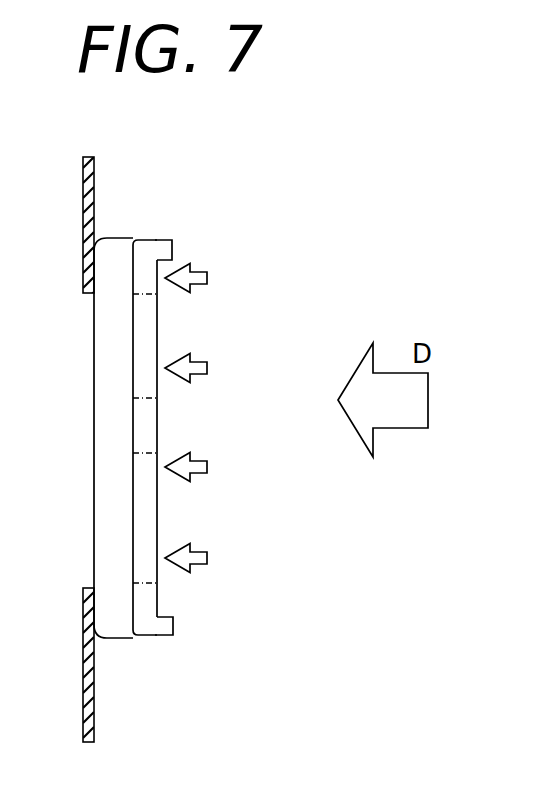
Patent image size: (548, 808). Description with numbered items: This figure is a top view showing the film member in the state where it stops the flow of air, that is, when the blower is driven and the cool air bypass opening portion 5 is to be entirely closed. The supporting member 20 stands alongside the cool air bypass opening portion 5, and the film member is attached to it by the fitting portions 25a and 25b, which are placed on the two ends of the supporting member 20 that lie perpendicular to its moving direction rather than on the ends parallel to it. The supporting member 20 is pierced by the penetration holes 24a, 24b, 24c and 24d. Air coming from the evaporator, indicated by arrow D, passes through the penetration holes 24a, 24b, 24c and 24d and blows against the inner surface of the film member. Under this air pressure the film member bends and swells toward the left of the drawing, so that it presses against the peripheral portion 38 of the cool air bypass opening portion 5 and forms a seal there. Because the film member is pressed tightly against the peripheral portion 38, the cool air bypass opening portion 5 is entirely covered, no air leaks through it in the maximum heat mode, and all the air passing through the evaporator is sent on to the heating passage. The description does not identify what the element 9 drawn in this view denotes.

The cool air bypass opening portion 5 is at (83, 293).
The mounting assembly 9 is at (187, 232).
The supporting member 20 is at (153, 606).
The penetration hole 24a is at (155, 527).
The penetration hole 24b is at (155, 343).
The penetration hole 24c is at (143, 297).
The penetration hole 24d is at (142, 458).
The fitting portion 25a is at (163, 243).
The fitting portion 25b is at (173, 627).
The peripheral portion 38 is at (96, 238).